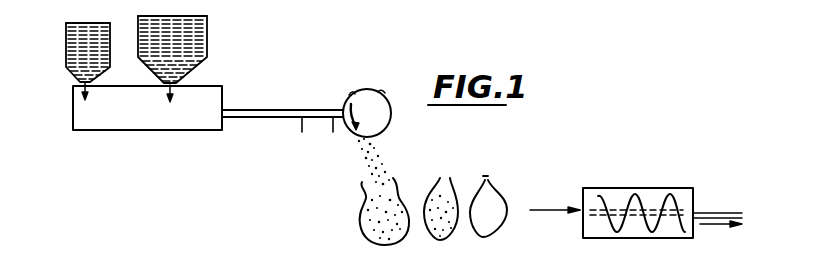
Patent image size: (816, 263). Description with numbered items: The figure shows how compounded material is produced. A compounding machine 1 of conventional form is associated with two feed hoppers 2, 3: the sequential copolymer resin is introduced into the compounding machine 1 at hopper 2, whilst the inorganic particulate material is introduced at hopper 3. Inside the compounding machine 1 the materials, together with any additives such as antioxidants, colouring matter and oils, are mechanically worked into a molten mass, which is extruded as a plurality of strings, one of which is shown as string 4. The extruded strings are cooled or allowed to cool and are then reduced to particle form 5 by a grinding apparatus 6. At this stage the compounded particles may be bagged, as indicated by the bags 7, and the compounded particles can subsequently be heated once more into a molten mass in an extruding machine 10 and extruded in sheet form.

The compounding machine 1 is at (116, 132).
The feed hopper 2 is at (68, 72).
The feed hopper 3 is at (208, 50).
The extruded string 4 is at (266, 109).
The particle form 5 is at (383, 158).
The grinding apparatus 6 is at (365, 89).
The bagged compounded particles 7 is at (470, 182).
The extruding machine 10 is at (634, 189).